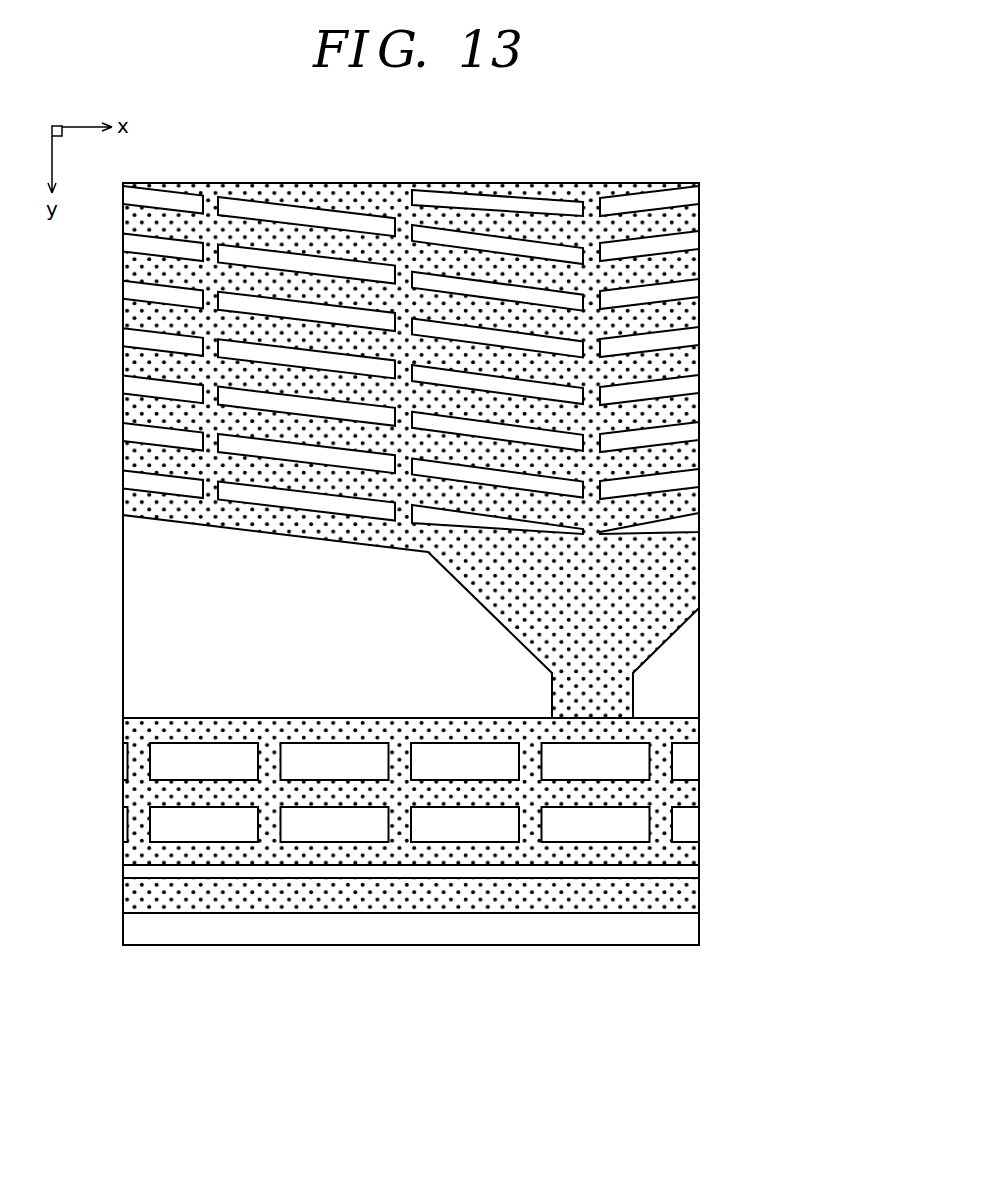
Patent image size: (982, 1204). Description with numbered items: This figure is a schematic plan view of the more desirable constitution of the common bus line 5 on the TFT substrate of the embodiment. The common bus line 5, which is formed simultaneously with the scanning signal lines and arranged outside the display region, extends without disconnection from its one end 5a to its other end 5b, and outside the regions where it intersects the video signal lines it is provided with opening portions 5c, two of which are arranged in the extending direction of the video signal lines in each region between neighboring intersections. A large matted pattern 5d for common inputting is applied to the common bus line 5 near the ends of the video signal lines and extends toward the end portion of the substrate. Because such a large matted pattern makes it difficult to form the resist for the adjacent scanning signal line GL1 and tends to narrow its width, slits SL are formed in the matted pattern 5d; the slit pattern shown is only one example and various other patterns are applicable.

The slit SL is at (276, 295).
The matted pattern 5d is at (427, 210).
The common bus line 5 is at (400, 819).
The one end of the common bus line 5a is at (178, 708).
The another end of the common bus line 5b is at (172, 876).
The opening portion 5c is at (316, 831).
The scanning signal line GL1 is at (667, 893).